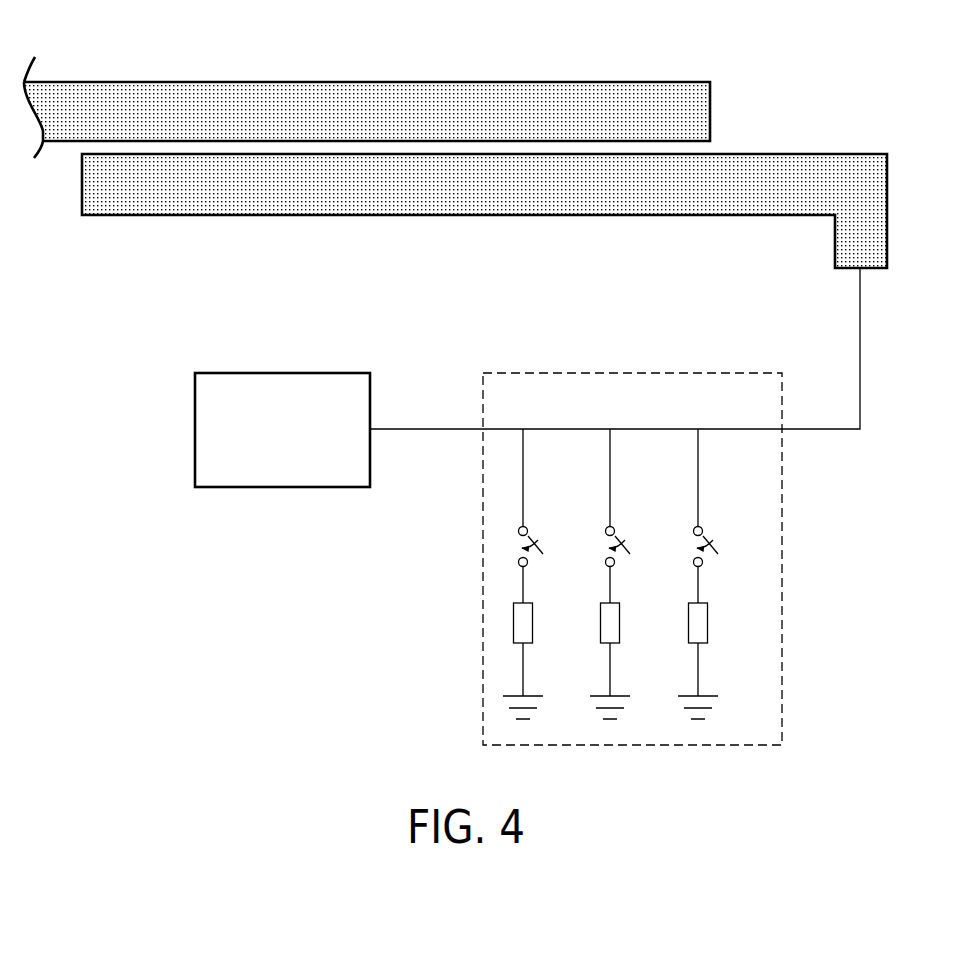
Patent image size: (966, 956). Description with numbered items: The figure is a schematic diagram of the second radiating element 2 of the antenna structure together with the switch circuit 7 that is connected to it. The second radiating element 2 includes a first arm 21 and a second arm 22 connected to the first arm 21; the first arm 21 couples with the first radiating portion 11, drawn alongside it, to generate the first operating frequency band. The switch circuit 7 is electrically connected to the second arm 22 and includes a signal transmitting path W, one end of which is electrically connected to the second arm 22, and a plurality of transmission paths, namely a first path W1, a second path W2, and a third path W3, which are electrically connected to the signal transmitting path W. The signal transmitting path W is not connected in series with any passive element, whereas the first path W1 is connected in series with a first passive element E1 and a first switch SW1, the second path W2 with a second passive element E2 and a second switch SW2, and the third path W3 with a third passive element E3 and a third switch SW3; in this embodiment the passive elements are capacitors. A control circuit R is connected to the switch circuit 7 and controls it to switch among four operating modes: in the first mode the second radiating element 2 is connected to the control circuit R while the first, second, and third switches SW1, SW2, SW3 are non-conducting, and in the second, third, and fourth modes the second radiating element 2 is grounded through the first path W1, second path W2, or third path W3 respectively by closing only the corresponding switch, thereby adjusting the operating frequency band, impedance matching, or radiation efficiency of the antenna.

The first radiating portion 11 is at (487, 97).
The second radiating element 2 is at (516, 175).
The first arm 21 is at (490, 198).
The second arm 22 is at (868, 252).
The control circuit R is at (283, 373).
The switch circuit 7 is at (624, 373).
The signal transmitting path W is at (653, 429).
The third path W3 is at (525, 455).
The second path W2 is at (612, 455).
The first path W1 is at (700, 455).
The third switch SW3 is at (551, 541).
The second switch SW2 is at (638, 541).
The first switch SW1 is at (726, 541).
The third passive element E3 is at (533, 622).
The second passive element E2 is at (620, 622).
The first passive element E1 is at (708, 622).